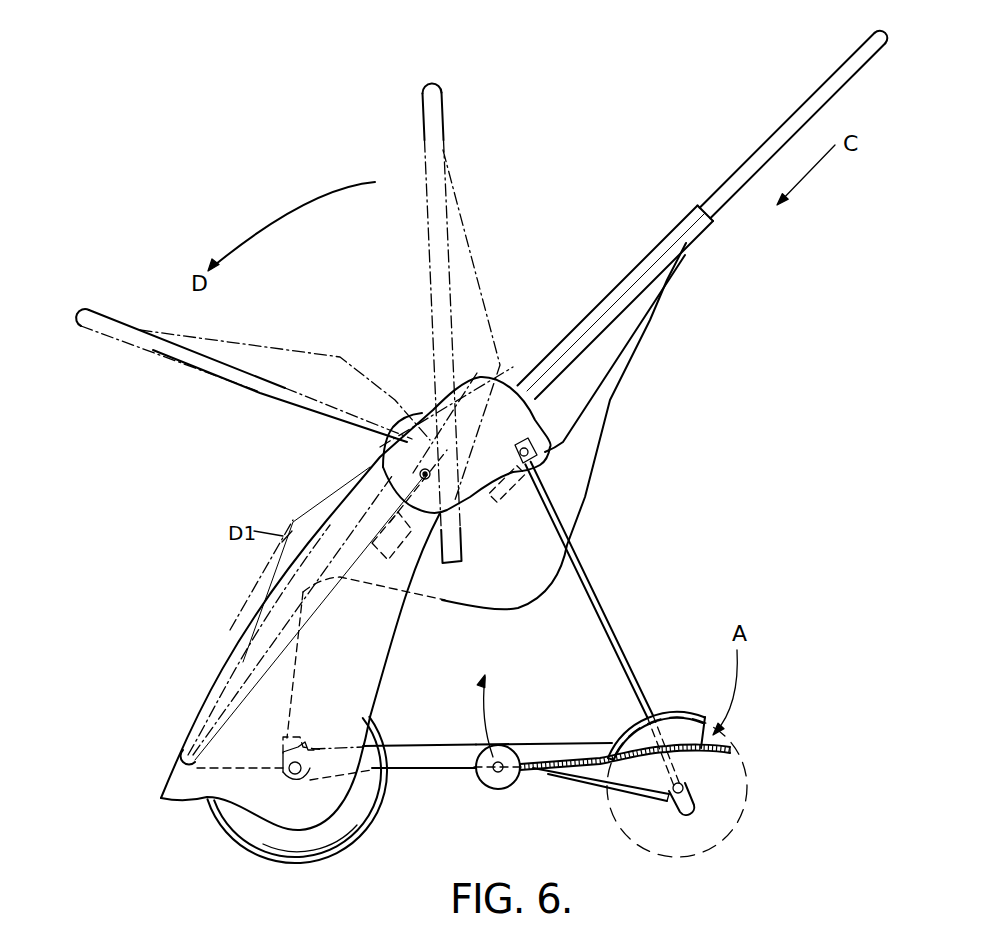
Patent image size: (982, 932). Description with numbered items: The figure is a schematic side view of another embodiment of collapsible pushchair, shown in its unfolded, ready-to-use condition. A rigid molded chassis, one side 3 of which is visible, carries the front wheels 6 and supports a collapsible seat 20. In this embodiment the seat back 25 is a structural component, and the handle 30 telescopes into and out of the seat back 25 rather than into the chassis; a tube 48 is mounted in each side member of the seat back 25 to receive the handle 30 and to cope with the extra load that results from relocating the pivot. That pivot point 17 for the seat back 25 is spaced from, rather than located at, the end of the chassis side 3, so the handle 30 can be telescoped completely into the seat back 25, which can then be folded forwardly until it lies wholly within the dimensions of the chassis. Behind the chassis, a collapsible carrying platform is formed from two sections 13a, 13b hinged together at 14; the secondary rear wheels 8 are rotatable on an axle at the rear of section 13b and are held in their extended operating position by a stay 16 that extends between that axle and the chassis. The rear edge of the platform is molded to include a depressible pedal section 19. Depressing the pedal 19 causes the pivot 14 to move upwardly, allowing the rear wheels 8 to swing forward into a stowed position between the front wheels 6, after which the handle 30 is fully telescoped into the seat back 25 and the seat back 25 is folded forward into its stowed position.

The handle 30 is at (780, 132).
The tube 48 is at (672, 262).
The seat back 25 is at (623, 333).
The collapsible seat 20 is at (596, 468).
The stay 16 is at (586, 582).
The pivot pin / pivot point 17 is at (420, 474).
The chassis side 3 is at (370, 643).
The front wheels 6 is at (338, 827).
The platform section 13a is at (429, 760).
The rear platform section 13b is at (567, 750).
The hinge / pivot 14 is at (492, 782).
The pedal section 19 is at (710, 740).
The secondary rear wheels 8 is at (718, 807).